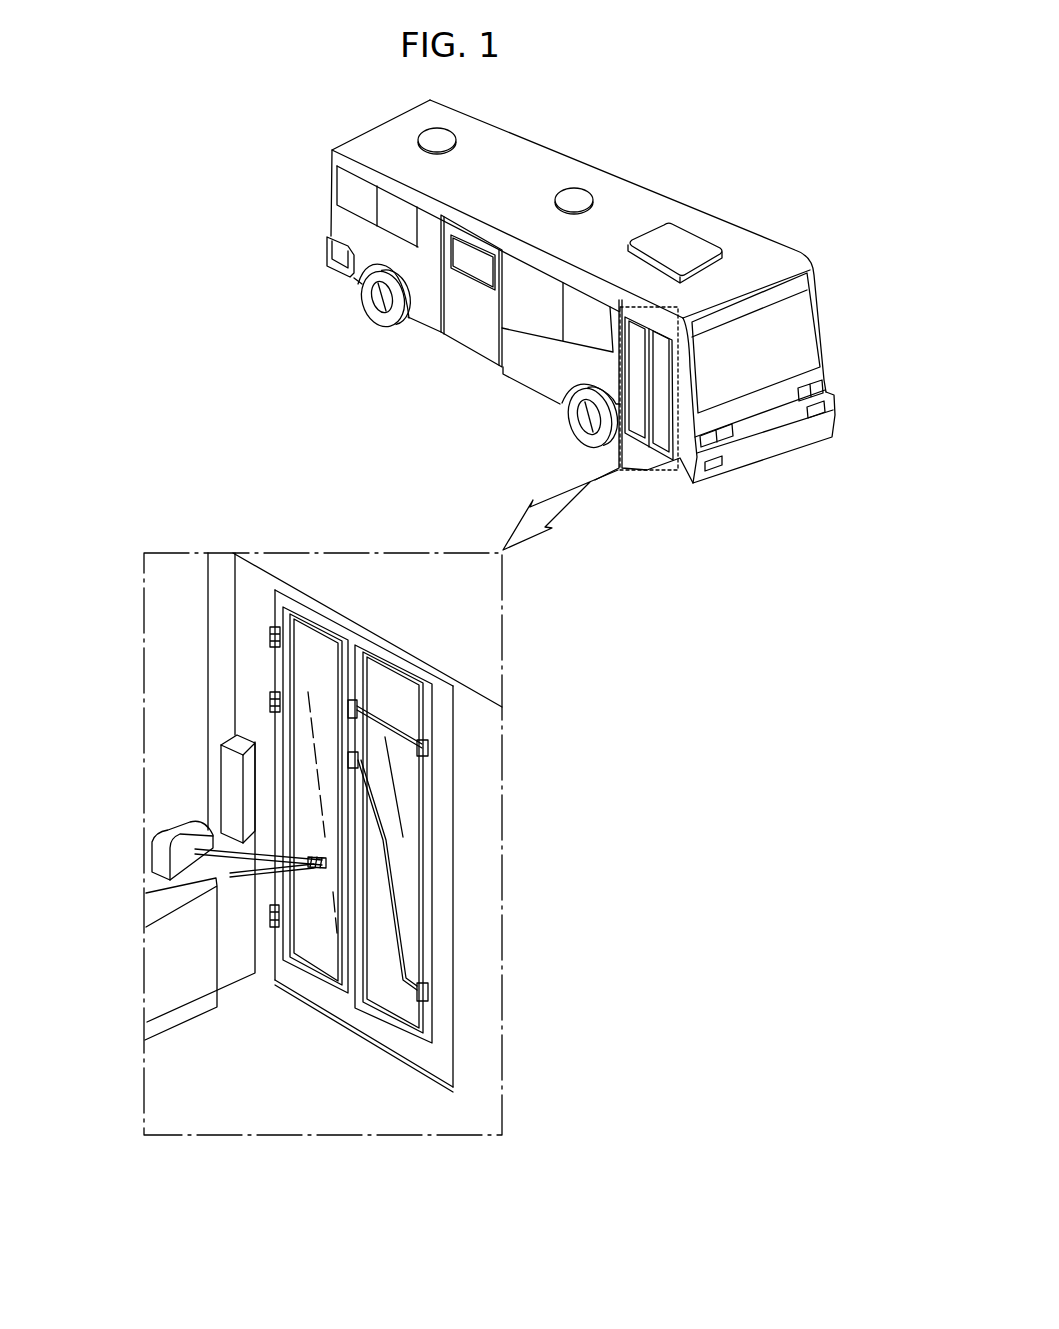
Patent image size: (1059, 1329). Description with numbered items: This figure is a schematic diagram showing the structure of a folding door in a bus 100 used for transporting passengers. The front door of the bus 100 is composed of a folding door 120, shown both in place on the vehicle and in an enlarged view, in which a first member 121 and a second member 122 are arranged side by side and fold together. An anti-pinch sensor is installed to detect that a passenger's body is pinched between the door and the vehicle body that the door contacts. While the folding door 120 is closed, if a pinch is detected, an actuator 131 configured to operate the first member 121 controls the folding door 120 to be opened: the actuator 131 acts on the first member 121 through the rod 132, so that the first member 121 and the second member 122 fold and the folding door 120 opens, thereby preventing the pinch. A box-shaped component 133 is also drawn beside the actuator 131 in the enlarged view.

The bus 100 is at (812, 118).
The folding door 120 is at (713, 603).
The first member 121 is at (660, 437).
The second member 122 is at (635, 432).
The actuator 131 is at (182, 838).
The rod 132 is at (243, 870).
The controller box 133 is at (227, 782).